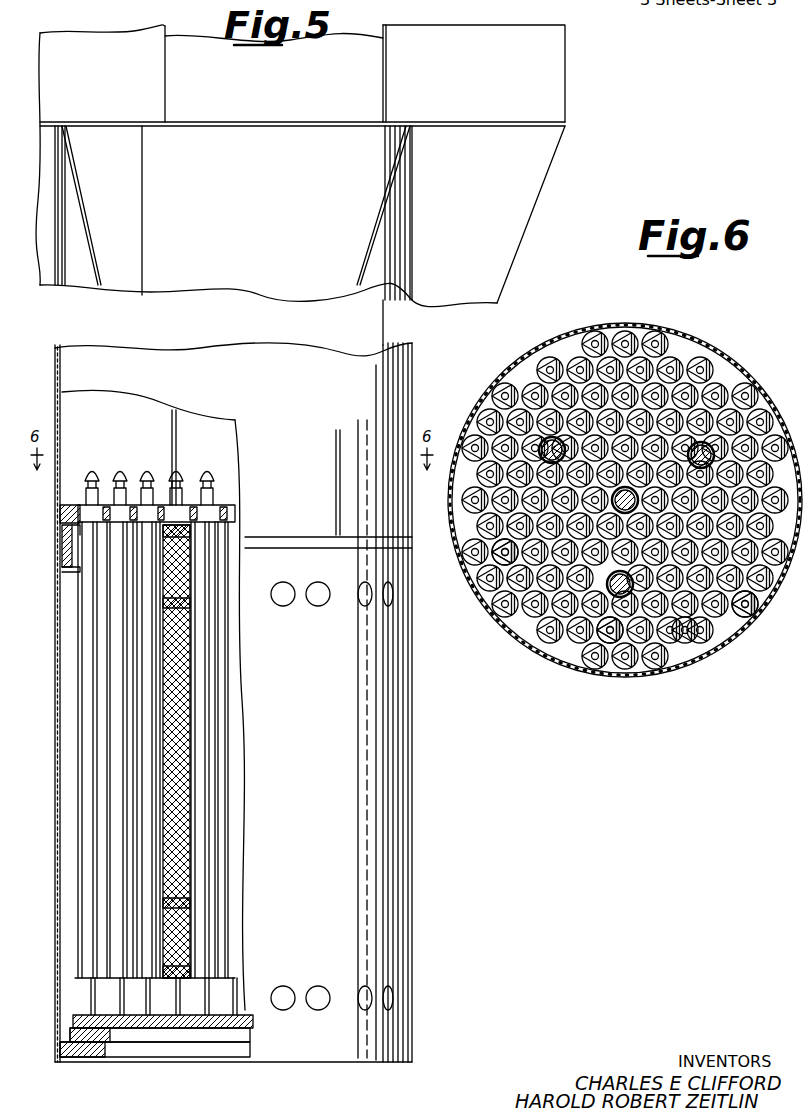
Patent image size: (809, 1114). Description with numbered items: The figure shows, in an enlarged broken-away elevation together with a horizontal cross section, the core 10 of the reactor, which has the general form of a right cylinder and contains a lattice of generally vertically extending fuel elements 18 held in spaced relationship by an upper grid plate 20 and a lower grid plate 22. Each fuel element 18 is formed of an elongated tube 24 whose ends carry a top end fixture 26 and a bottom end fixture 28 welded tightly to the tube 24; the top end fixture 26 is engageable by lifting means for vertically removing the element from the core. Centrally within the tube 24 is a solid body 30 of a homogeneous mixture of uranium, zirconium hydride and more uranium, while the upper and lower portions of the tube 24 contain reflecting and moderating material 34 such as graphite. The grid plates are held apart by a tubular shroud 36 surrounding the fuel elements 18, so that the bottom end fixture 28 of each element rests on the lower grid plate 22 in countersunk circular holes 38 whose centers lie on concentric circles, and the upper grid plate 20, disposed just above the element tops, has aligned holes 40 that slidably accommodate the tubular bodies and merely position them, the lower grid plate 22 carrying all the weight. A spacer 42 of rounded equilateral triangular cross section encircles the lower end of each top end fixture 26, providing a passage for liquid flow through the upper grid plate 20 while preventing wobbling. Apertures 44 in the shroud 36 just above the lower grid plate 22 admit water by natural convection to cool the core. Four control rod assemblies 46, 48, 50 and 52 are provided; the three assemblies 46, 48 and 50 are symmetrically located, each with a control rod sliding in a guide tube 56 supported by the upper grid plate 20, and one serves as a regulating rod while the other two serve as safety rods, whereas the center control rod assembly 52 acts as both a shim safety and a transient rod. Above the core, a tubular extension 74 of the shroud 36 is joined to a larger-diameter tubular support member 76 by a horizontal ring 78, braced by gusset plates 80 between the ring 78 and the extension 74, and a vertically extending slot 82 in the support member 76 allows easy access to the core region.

In FIG. 5, the core 10 is at (250, 702).
In FIG. 6, the core 10 is at (625, 522).
In FIG. 5, the fuel elements 18 is at (92, 886).
In FIG. 6, the fuel elements 18 is at (590, 656).
In FIG. 5, the upper grid plate 20 is at (60, 515).
In FIG. 6, the upper grid plate 20 is at (625, 523).
In FIG. 5, the lower grid plate 22 is at (130, 1036).
In FIG. 5, the tube 24 is at (217, 751).
In FIG. 5, the top end fixture 26 is at (182, 478).
In FIG. 6, the top end fixture 26 is at (748, 610).
In FIG. 5, the bottom end fixture 28 is at (238, 998).
In FIG. 5, the solid body 30 is at (180, 716).
In FIG. 5, the reflecting and moderating material 34 is at (180, 580).
In FIG. 5, the tubular shroud 36 is at (56, 657).
In FIG. 6, the tubular shroud 36 is at (492, 630).
In FIG. 5, the circular holes 38 is at (165, 1040).
In FIG. 5, the holes 40 is at (63, 550).
In FIG. 6, the holes 40 is at (698, 645).
In FIG. 5, the spacer 42 is at (100, 507).
In FIG. 6, the spacer 42 is at (498, 565).
In FIG. 5, the apertures 44 is at (390, 988).
In FIG. 6, the control rod assembly 46 is at (608, 645).
In FIG. 6, the control rod assembly 48 is at (538, 442).
In FIG. 6, the control rod assembly 50 is at (728, 424).
In FIG. 6, the center control rod assembly 52 is at (640, 501).
In FIG. 5, the guide tube 56 is at (168, 420).
In FIG. 6, the guide tube 56 is at (553, 436).
In FIG. 5, the tubular extension 74 is at (437, 285).
In FIG. 5, the tubular support member 76 is at (560, 58).
In FIG. 5, the ring 78 is at (562, 126).
In FIG. 5, the gusset plates 80 is at (537, 193).
In FIG. 5, the slot 82 is at (386, 96).